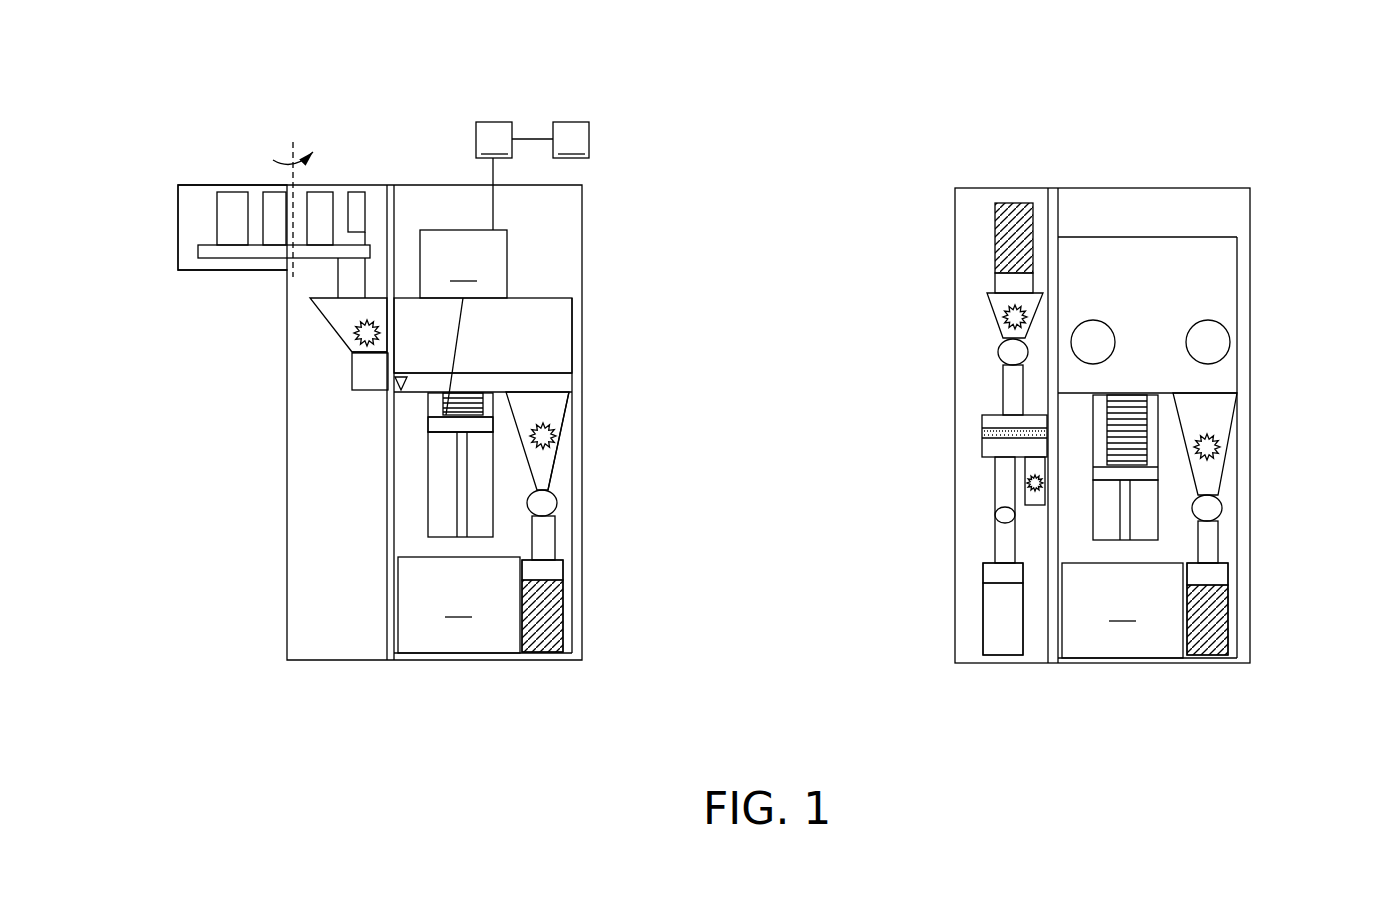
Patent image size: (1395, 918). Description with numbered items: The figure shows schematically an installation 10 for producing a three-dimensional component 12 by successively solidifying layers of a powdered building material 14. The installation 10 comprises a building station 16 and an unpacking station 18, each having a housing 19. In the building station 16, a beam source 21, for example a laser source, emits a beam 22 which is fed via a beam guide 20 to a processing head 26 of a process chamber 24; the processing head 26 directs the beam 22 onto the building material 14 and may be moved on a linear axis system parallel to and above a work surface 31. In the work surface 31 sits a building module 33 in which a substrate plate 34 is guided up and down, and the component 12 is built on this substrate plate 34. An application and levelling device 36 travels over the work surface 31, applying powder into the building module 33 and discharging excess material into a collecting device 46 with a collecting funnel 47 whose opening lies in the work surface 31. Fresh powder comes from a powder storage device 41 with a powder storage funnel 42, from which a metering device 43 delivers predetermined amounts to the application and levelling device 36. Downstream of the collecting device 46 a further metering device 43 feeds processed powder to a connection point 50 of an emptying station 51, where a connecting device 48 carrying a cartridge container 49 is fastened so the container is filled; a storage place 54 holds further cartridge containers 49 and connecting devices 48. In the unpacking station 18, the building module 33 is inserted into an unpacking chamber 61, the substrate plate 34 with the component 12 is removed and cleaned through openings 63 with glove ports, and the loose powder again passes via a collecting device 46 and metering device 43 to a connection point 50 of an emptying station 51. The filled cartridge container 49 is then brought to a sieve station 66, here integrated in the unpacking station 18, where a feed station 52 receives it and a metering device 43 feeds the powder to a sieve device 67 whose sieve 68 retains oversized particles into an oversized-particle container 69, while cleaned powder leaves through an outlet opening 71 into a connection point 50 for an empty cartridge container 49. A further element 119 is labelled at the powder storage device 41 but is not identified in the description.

The installation 10 is at (745, 148).
The three-dimensional component 12 is at (428, 405).
The powdered building material 14 is at (353, 330).
The building station 16 is at (586, 210).
The unpacking station 18 is at (1252, 190).
The housing 19 is at (582, 276).
The beam guide 20 is at (494, 140).
The beam source 21 is at (571, 140).
The beam 22 is at (530, 133).
The process chamber 24 is at (455, 196).
The processing head 26 is at (463, 228).
The work surface 31 is at (503, 390).
The building module 33 is at (427, 503).
The substrate plate 34 is at (428, 425).
The application and levelling device 36 is at (387, 392).
The powder storage device 41 is at (155, 225).
The powder storage funnel 42 is at (352, 345).
The metering device 43 is at (352, 369).
The collecting device 46 is at (566, 412).
The collecting funnel 47 is at (560, 450).
The connecting device 48 is at (348, 242).
The cartridge container 49 is at (353, 205).
The connection point 50 is at (373, 244).
The emptying station 51 is at (566, 565).
The feed station 52 is at (376, 262).
The storage place 54 is at (790, 607).
The unpacking chamber 61 is at (1133, 216).
The openings 63 is at (1222, 313).
The sieve station 66 is at (983, 185).
The sieve device 67 is at (979, 414).
The sieve 68 is at (980, 432).
The oversized-particle container 69 is at (1023, 495).
The outlet opening 71 is at (993, 470).
The cartridge 119 is at (197, 205).